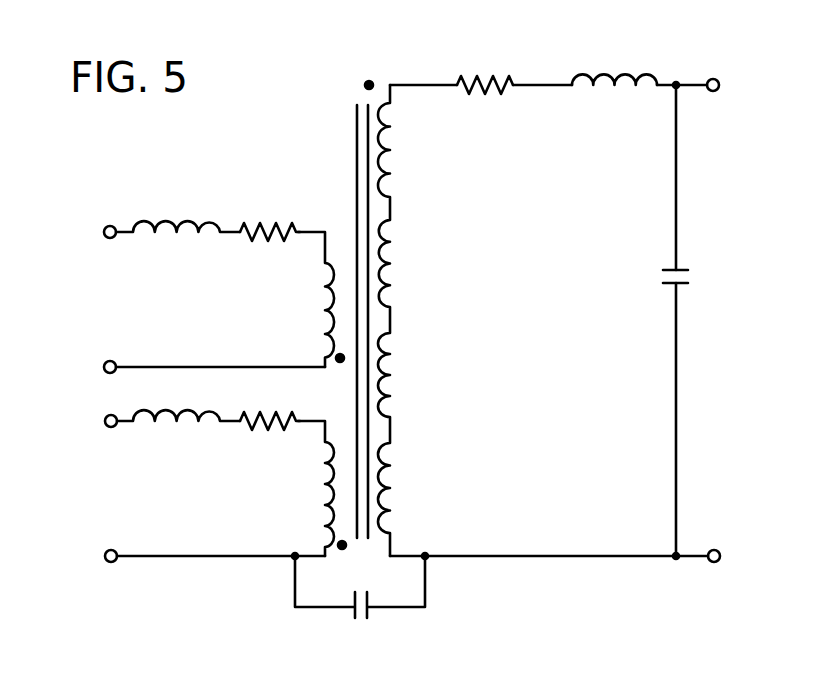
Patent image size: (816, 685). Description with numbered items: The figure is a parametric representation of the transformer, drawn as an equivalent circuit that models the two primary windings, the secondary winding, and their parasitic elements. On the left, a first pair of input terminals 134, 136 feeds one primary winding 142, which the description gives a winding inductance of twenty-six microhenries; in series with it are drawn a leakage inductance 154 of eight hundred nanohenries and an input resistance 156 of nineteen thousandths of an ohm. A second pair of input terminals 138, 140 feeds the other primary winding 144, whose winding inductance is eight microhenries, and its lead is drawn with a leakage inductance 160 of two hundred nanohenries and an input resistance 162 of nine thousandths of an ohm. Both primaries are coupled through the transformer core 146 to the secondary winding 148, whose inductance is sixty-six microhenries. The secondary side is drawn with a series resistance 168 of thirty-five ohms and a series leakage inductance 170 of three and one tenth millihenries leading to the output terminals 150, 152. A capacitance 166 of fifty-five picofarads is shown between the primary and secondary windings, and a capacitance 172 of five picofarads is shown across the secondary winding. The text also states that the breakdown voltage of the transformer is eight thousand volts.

The first input terminal 134 is at (104, 232).
The second input terminal 136 is at (104, 367).
The third input terminal 138 is at (105, 421).
The fourth input terminal 140 is at (105, 556).
The primary winding 142 is at (325, 303).
The primary winding 144 is at (325, 490).
The transformer core 146 is at (356, 183).
The secondary winding Ls 148 is at (392, 155).
The first output terminal 150 is at (719, 84).
The second output terminal 152 is at (720, 555).
The lead inductance of first primary 154 is at (153, 228).
The lead resistance of first primary 156 is at (254, 224).
The lead inductance of second primary 160 is at (152, 415).
The lead resistance of second primary 162 is at (262, 414).
The capacitor C 166 is at (355, 608).
The series resistance Rs 168 is at (468, 95).
The series inductance Ls 170 is at (600, 70).
The stray capacitance Cs 172 is at (688, 277).